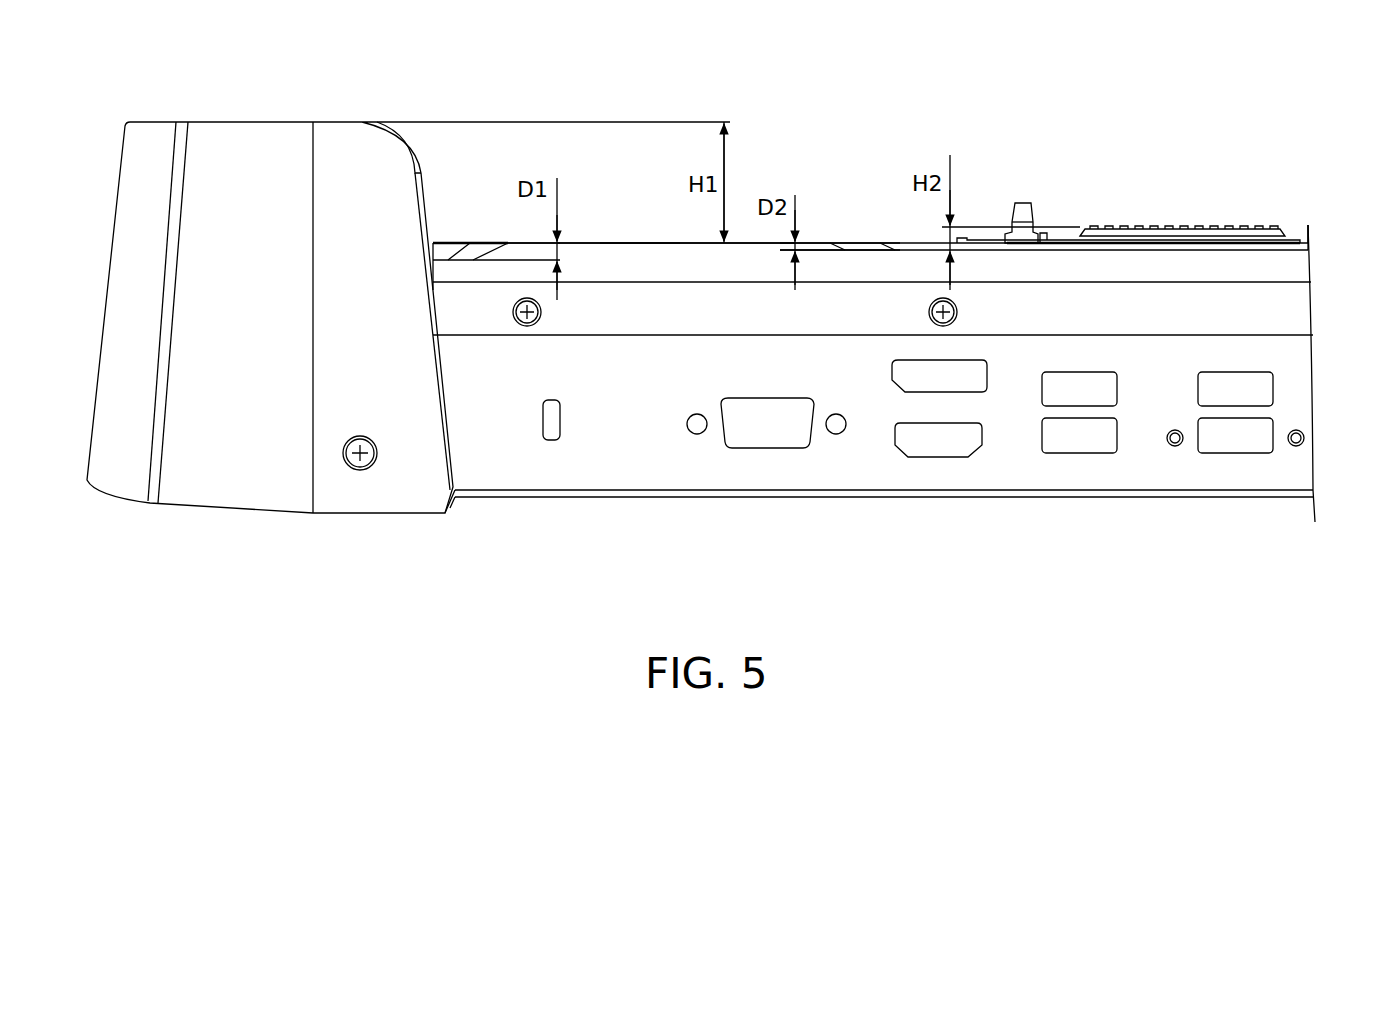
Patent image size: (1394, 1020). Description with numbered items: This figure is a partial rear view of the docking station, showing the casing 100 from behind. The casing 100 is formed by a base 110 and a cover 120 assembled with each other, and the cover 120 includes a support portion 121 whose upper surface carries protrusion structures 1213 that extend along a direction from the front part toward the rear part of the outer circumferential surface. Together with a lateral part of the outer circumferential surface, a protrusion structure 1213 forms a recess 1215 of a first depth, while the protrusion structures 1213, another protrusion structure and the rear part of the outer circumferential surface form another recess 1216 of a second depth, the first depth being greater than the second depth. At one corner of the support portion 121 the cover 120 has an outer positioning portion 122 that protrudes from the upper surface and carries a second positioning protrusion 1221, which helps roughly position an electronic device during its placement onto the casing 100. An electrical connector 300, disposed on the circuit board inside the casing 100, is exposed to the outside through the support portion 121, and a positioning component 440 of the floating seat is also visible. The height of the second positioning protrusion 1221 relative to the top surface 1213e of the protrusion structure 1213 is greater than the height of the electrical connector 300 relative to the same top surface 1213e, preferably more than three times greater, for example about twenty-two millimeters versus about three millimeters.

The casing 100 is at (1330, 585).
The base 110 is at (1125, 497).
The cover 120 is at (1290, 345).
The support portion 121 is at (1296, 262).
The outer positioning portion 122 is at (92, 270).
The second positioning protrusion 1221 is at (243, 158).
The protrusion structure 1213 is at (610, 250).
The top surface of the protrusion structure 1213e is at (638, 240).
The recess 1215 is at (447, 240).
The recess 1216 is at (818, 240).
The electrical connector 300 is at (1178, 229).
The positioning component 440 is at (1024, 205).